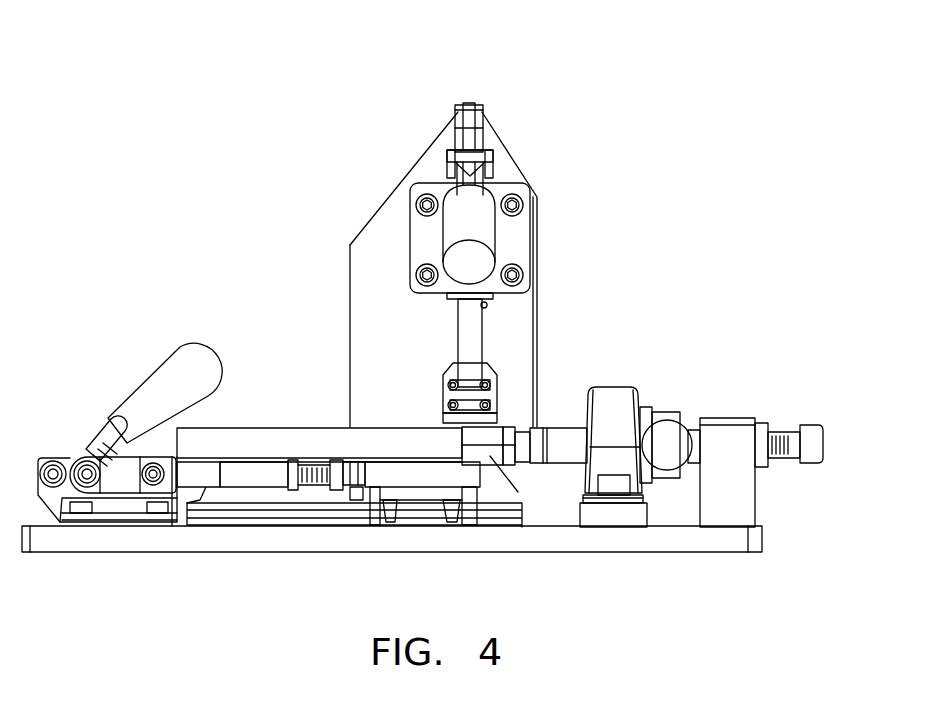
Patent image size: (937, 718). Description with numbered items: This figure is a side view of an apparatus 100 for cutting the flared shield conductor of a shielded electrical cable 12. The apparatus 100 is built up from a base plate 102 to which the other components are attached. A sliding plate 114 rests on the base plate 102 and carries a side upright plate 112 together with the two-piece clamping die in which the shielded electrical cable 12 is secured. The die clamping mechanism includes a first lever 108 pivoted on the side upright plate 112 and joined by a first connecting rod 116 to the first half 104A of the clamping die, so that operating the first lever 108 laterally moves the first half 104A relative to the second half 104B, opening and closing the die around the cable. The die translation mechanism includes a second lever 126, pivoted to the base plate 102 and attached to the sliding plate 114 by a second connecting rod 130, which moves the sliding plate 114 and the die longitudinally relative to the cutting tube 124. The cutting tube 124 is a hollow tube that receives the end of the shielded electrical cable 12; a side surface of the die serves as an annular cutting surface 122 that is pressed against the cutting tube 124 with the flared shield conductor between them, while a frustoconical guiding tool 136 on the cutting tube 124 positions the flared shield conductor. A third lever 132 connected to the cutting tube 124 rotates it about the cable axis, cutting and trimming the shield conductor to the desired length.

The apparatus 100 is at (646, 151).
The base plate 102 is at (648, 543).
The first half of the clamping die 104A is at (482, 438).
The second half of the clamping die 104B is at (500, 460).
The first lever 108 is at (460, 253).
The side upright plate 112 is at (537, 217).
The sliding plate 114 is at (428, 473).
The first connecting rod 116 is at (462, 342).
The cutting surface 122 is at (515, 432).
The cutting tube 124 is at (558, 452).
The second lever 126 is at (170, 372).
The second connecting rod 130 is at (250, 478).
The third lever 132 is at (680, 432).
The frustoconical guiding tool 136 is at (521, 440).
The shielded electrical cable 12 is at (292, 437).